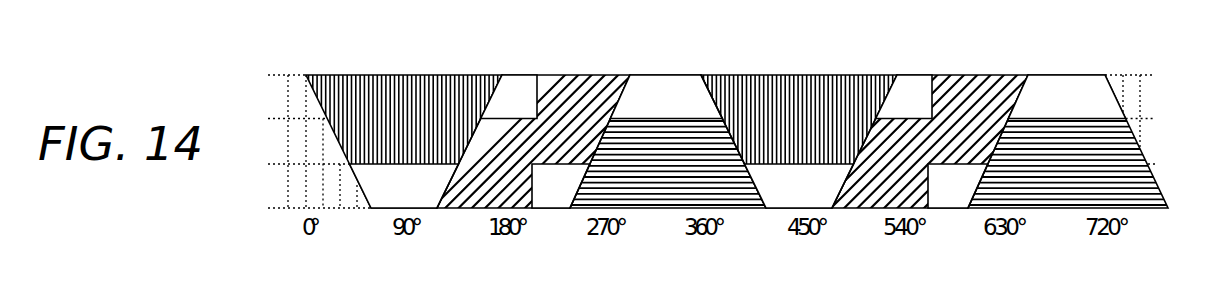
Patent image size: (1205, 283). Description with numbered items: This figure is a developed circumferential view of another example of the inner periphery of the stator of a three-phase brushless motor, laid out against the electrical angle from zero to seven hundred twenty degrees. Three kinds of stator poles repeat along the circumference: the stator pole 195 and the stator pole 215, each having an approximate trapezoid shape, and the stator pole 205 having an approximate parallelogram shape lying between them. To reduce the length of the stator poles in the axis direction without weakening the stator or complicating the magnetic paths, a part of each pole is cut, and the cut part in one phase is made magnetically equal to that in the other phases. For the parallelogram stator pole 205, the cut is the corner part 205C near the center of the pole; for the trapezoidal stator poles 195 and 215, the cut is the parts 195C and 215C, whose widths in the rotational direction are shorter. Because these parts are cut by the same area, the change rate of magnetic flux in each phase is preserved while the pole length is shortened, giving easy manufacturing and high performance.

The stator pole 195 is at (400, 125).
The cut part of stator pole 195C is at (385, 187).
The stator pole 205 is at (565, 130).
The corner part of stator pole 205C is at (517, 95).
The stator pole 215 is at (665, 145).
The cut part of stator pole 215C is at (648, 95).